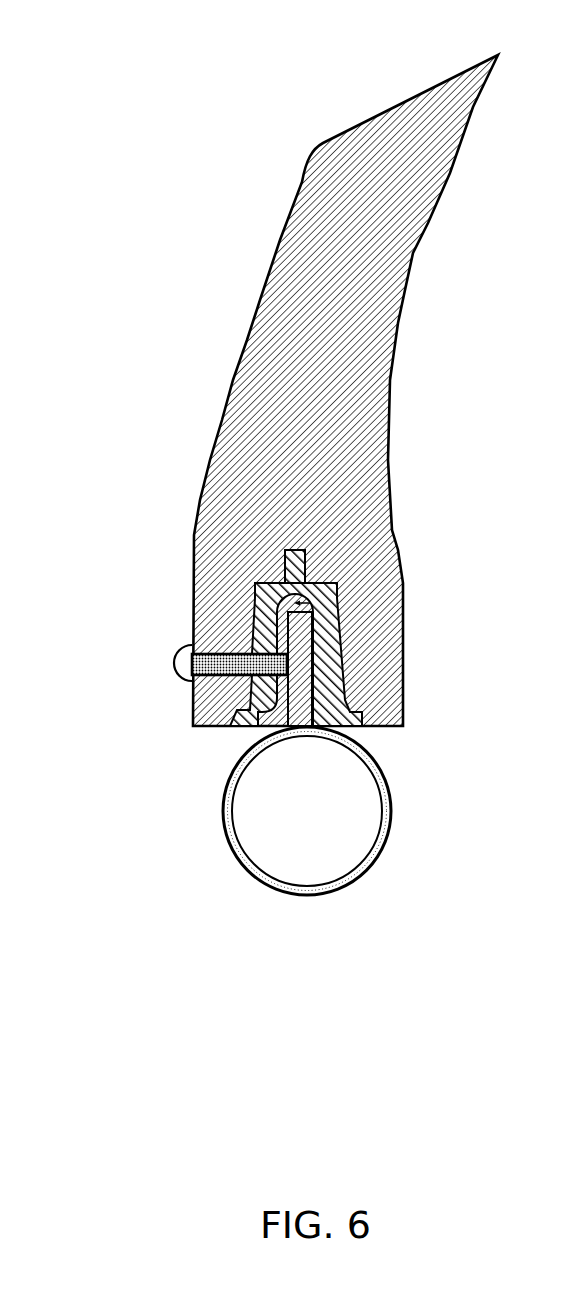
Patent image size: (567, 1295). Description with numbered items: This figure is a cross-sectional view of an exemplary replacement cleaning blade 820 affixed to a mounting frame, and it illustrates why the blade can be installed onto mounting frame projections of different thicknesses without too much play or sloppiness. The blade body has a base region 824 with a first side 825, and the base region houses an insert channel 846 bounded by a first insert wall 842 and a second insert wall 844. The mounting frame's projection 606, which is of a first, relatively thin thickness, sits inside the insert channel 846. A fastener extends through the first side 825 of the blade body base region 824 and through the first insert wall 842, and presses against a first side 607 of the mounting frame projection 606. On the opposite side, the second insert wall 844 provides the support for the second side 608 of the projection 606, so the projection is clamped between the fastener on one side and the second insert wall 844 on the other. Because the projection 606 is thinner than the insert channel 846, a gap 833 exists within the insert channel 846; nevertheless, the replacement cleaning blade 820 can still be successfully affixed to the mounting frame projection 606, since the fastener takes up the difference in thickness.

The replacement cleaning blade 820 is at (263, 454).
The blade body base region 824 is at (156, 560).
The first side of the blade body base region 825 is at (205, 603).
The gap 833 is at (277, 641).
The first insert wall 842 is at (166, 665).
The second insert wall 844 is at (337, 652).
The insert channel 846 is at (337, 592).
The projection 606 is at (288, 700).
The first side of mounting frame projection 607 is at (272, 720).
The second side of the projection 608 is at (347, 654).